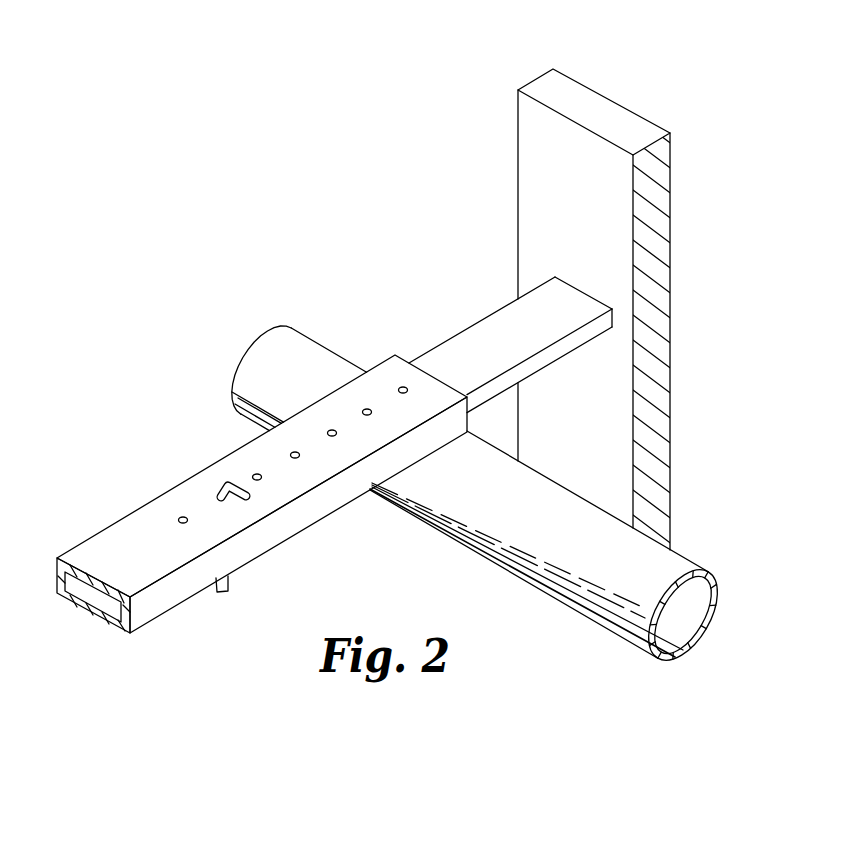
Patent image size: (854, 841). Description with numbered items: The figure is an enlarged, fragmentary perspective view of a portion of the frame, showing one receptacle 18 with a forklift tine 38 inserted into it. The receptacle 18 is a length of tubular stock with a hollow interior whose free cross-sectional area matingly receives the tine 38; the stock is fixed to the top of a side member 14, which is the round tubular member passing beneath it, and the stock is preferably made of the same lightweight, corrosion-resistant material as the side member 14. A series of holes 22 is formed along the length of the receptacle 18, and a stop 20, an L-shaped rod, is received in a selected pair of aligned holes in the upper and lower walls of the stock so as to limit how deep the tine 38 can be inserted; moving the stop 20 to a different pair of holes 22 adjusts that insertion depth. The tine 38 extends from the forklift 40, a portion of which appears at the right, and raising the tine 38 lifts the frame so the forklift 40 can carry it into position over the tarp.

The side member 14 is at (672, 563).
The receptacle 18 is at (92, 600).
The stop 20 is at (218, 486).
The holes 22 is at (252, 474).
The tine 38 is at (453, 358).
The forklift 40 is at (629, 108).